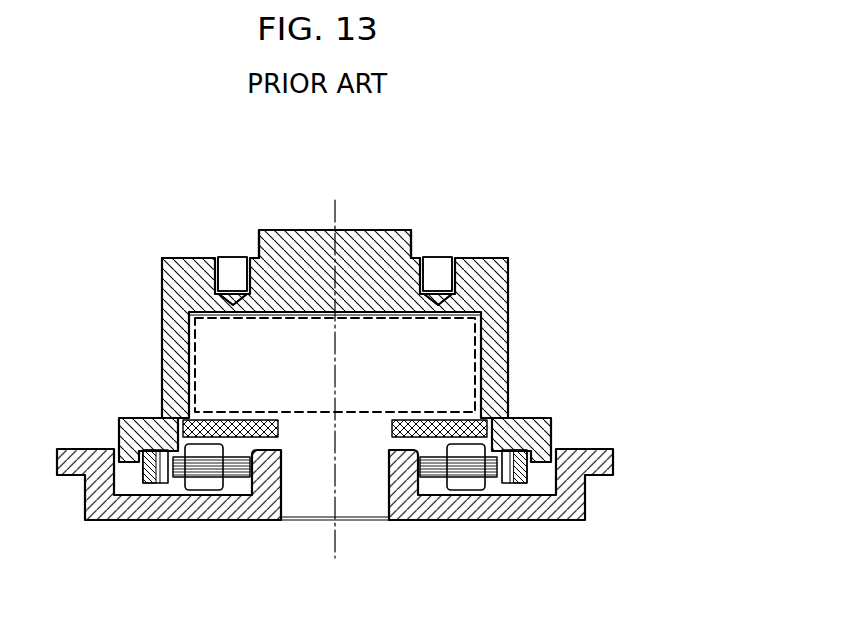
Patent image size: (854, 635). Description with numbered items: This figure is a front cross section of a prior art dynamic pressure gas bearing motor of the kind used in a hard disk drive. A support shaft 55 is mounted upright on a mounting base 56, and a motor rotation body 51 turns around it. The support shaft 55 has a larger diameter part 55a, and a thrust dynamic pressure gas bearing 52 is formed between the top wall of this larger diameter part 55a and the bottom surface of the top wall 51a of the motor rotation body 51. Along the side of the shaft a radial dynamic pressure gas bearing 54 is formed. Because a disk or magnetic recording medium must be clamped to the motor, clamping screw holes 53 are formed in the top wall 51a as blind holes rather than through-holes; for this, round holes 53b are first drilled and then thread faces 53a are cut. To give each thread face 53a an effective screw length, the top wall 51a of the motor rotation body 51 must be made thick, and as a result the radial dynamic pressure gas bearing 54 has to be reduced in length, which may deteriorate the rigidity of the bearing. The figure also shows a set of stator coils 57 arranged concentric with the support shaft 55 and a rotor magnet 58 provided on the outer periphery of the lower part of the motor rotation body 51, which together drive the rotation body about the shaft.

The motor rotation body 51 is at (159, 249).
The top wall 51a is at (297, 292).
The thrust dynamic pressure gas bearing 52 is at (353, 310).
The clamping screw holes 53 is at (237, 297).
The thread faces 53a is at (231, 275).
The round holes 53b is at (236, 300).
The radial dynamic pressure gas bearing 54 is at (484, 372).
The support shaft 55 is at (451, 347).
The larger diameter part 55a is at (335, 365).
The mounting base 56 is at (431, 505).
The stator coils 57 is at (207, 462).
The rotor magnet 58 is at (503, 475).